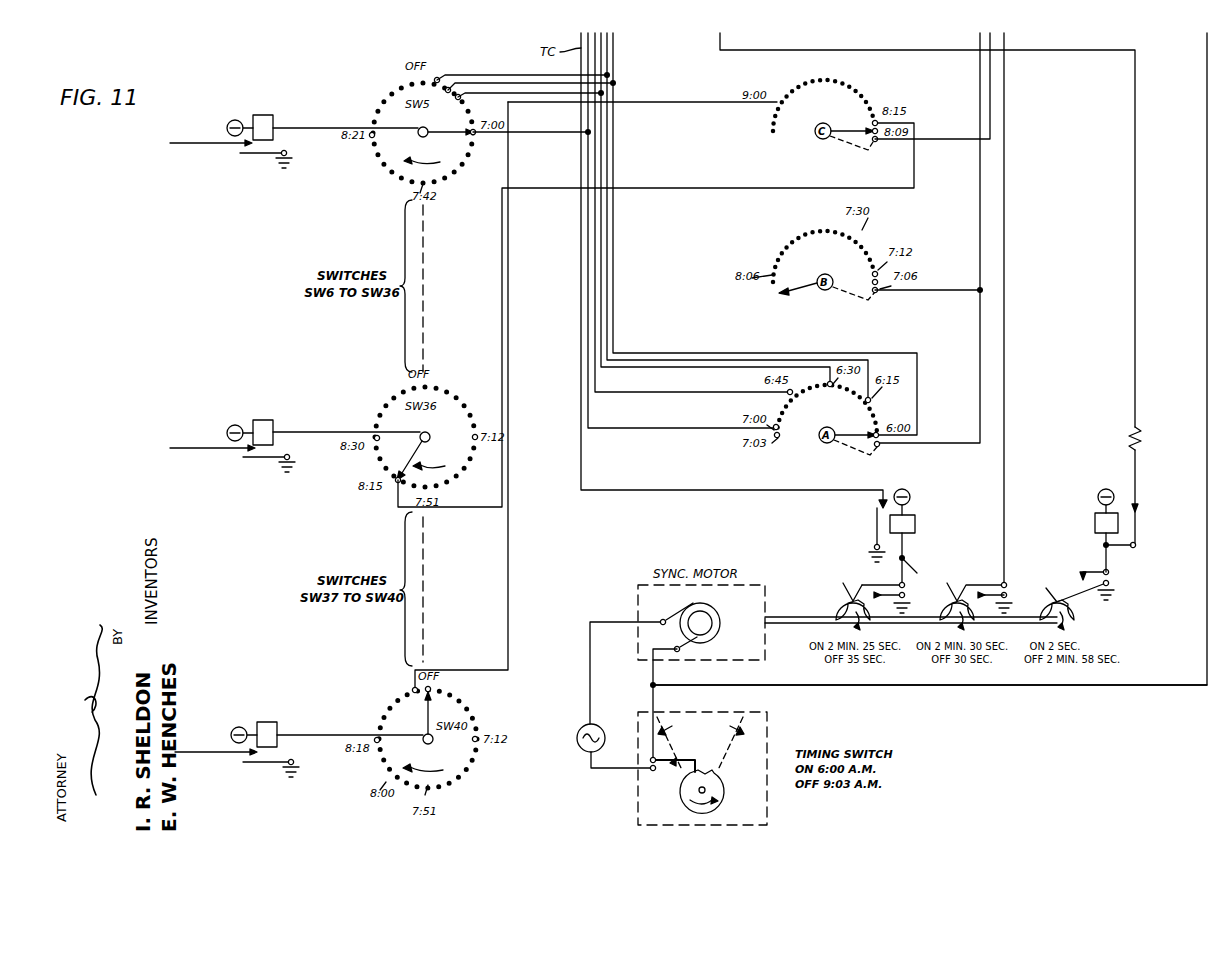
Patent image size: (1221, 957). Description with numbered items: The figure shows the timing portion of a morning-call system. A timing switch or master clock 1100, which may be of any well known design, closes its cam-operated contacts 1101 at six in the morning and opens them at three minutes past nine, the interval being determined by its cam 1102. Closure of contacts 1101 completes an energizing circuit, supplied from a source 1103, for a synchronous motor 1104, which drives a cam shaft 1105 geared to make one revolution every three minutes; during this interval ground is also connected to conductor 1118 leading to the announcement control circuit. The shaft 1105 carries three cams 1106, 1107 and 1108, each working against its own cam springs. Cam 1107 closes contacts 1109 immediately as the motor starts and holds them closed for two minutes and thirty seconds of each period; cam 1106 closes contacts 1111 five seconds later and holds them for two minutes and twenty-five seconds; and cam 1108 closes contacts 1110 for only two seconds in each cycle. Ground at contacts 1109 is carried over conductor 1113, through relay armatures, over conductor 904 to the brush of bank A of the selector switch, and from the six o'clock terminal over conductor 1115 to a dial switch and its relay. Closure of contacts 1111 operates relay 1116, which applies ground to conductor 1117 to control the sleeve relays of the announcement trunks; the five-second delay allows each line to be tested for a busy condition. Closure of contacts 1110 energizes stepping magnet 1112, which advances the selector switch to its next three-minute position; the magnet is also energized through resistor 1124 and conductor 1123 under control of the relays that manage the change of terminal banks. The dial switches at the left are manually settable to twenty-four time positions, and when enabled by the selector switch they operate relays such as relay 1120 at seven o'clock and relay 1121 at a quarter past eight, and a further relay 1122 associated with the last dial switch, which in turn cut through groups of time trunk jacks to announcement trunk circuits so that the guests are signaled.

The conductor 904 is at (978, 228).
The timing switch 1100 is at (762, 720).
The cam-operated contacts 1101 is at (665, 763).
The cam 1102 is at (722, 796).
The AC source 1103 is at (577, 744).
The synchronous motor 1104 is at (718, 622).
The cam shaft 1105 is at (793, 612).
The cam 1106 is at (838, 608).
The cam 1107 is at (955, 602).
The cam 1108 is at (1075, 621).
The cam contacts 1109 is at (996, 590).
The cam contacts 1110 is at (1083, 586).
The cam contacts 1111 is at (872, 590).
The stepping magnet 1112 is at (1095, 526).
The conductor 1113 is at (1004, 293).
The conductor 1115 is at (613, 254).
The relay 1116 is at (915, 524).
The conductor 1117 is at (581, 487).
The conductor 1118 is at (1207, 293).
The relay 1120 is at (262, 115).
The relay 1121 is at (262, 420).
The switch SW40 source 1122 is at (266, 722).
The conductor 1123 is at (1135, 193).
The resistor 1124 is at (1130, 437).